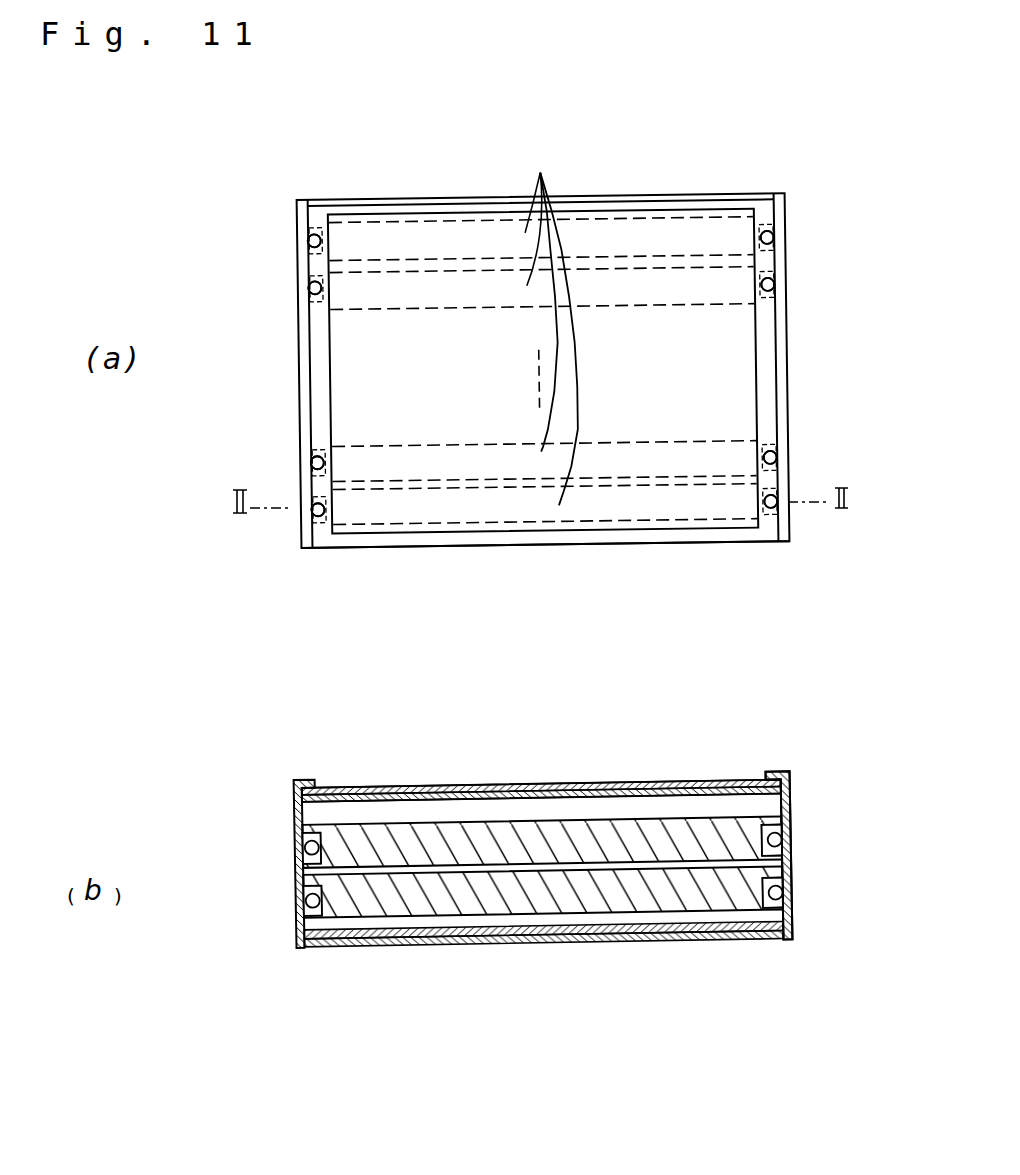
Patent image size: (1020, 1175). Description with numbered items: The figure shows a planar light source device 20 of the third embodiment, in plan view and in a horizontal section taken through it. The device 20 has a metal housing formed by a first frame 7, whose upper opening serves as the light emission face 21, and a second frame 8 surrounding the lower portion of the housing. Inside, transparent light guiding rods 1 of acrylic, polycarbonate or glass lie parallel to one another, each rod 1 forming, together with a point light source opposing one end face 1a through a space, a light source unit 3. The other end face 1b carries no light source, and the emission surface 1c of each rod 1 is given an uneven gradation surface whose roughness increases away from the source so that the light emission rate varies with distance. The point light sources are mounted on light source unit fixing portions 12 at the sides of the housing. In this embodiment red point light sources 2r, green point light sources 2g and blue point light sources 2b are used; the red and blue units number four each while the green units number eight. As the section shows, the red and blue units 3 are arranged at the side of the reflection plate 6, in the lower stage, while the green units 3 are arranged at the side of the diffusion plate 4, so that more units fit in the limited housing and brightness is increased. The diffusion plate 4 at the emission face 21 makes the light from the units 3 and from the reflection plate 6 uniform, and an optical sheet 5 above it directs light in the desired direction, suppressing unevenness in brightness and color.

The light guiding rod 1 is at (338, 222).
The end face 1a is at (333, 288).
The other end face 1b is at (758, 285).
The emission surface 1c is at (551, 324).
The green point light source 2g is at (311, 241).
The red point light source 2r is at (545, 352).
The blue point light source 2b is at (545, 602).
The light source unit 3 is at (220, 198).
The diffusion plate 4 is at (463, 795).
The optical sheet 5 is at (407, 787).
The reflection plate 6 is at (470, 930).
The first frame 7 is at (517, 546).
The second frame 8 is at (525, 947).
The light source unit fixing portion 12 is at (302, 207).
The planar light source device 20 is at (632, 193).
The light emission face 21 is at (630, 778).